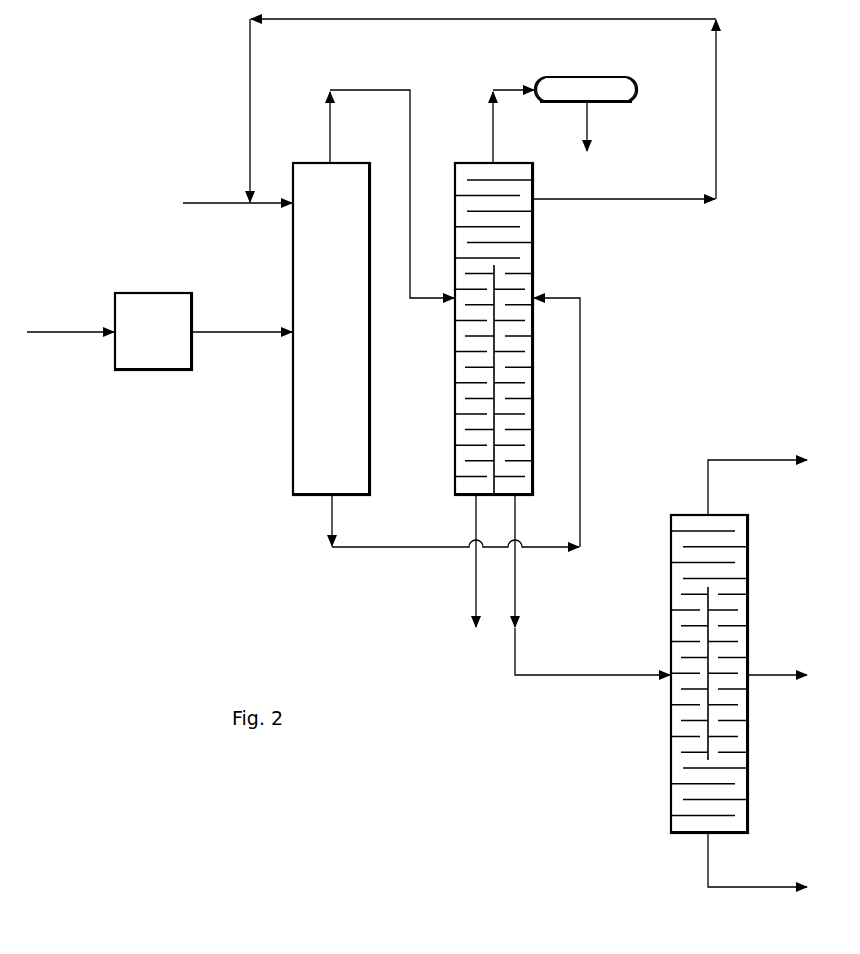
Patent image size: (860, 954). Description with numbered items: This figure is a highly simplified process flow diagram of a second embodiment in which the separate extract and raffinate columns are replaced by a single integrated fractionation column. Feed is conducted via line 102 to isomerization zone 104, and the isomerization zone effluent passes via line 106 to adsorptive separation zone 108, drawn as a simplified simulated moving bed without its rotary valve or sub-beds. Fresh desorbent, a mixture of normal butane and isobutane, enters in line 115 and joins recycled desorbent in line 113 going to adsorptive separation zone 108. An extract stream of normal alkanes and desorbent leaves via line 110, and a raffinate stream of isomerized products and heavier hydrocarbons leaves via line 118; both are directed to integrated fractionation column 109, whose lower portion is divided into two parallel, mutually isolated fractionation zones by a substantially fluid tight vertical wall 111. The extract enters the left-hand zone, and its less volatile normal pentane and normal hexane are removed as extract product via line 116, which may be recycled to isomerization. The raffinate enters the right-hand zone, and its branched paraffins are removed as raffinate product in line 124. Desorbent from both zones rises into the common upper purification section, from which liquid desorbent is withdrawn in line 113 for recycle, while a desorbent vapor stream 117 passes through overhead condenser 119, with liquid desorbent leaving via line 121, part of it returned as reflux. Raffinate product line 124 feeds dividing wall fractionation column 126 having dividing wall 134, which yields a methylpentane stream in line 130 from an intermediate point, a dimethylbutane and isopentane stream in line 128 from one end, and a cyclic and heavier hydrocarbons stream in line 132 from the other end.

The feed line 102 is at (64, 332).
The isomerization zone 104 is at (176, 343).
The isomerization zone effluent line 106 is at (245, 332).
The adsorptive separation zone 108 is at (354, 343).
The integrated fractionation column 109 is at (525, 193).
The extract stream line 110 is at (358, 90).
The vertical wall 111 is at (496, 282).
The recycled desorbent line 113 is at (718, 60).
The fresh desorbent line 115 is at (210, 203).
The extract product line 116 is at (474, 527).
The desorbent vapor stream 117 is at (511, 90).
The raffinate stream line 118 is at (363, 549).
The overhead condenser 119 is at (581, 77).
The condenser outlet line 121 is at (589, 127).
The raffinate product line 124 is at (517, 523).
The dividing wall fractionation column 126 is at (740, 560).
The first end product line 128 is at (745, 460).
The intermediate product line 130 is at (783, 675).
The second end product line 132 is at (735, 890).
The dividing wall 134 is at (710, 716).